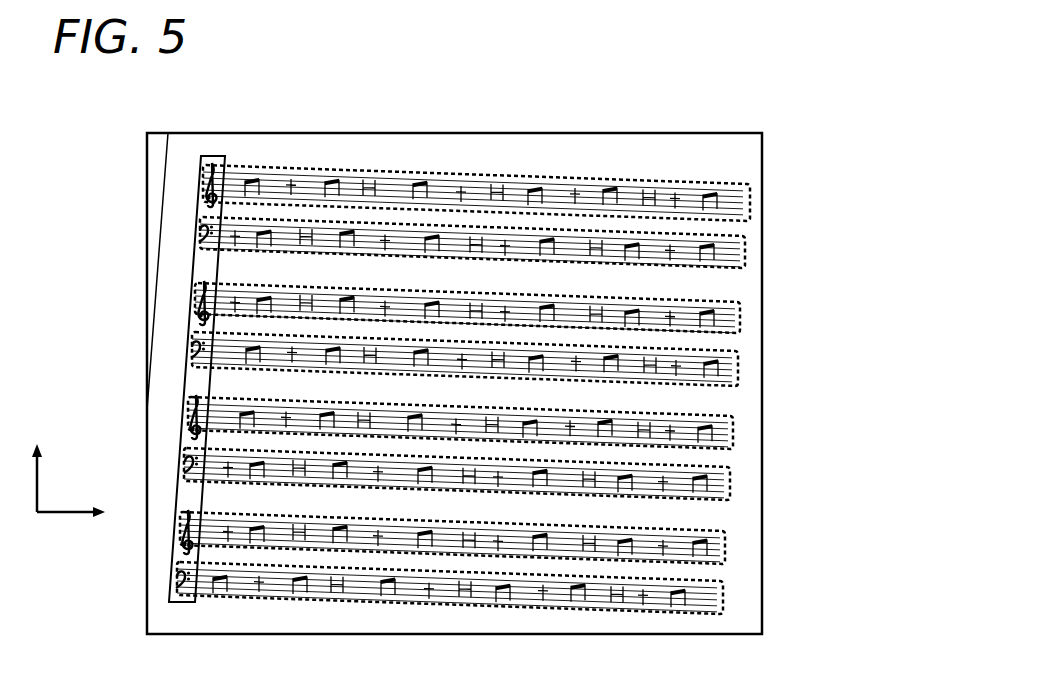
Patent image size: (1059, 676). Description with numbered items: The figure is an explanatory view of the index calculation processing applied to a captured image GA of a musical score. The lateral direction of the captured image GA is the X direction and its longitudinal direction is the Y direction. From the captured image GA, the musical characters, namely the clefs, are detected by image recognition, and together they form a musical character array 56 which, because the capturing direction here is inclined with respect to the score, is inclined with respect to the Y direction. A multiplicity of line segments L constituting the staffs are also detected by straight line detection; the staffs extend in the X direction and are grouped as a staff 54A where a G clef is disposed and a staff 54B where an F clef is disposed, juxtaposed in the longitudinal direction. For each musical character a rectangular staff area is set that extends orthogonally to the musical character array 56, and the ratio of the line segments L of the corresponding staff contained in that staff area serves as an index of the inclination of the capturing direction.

The captured image GA is at (762, 150).
The line segments L is at (660, 178).
The staff where a G clef is disposed 54A is at (777, 170).
The staff where an F clef is disposed 54B is at (777, 220).
The musical character array 56 is at (185, 379).
The X direction X is at (80, 513).
The Y direction Y is at (25, 478).